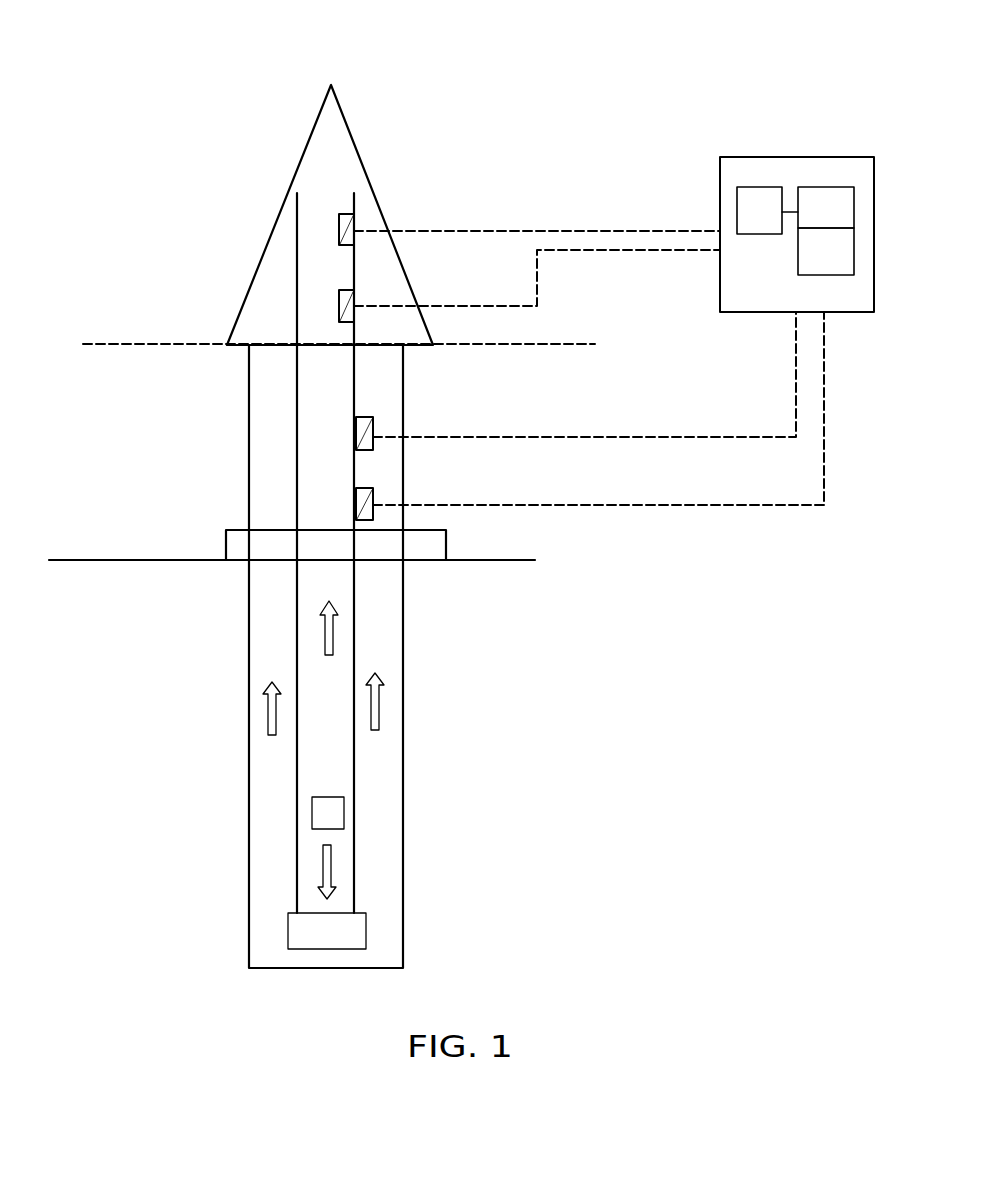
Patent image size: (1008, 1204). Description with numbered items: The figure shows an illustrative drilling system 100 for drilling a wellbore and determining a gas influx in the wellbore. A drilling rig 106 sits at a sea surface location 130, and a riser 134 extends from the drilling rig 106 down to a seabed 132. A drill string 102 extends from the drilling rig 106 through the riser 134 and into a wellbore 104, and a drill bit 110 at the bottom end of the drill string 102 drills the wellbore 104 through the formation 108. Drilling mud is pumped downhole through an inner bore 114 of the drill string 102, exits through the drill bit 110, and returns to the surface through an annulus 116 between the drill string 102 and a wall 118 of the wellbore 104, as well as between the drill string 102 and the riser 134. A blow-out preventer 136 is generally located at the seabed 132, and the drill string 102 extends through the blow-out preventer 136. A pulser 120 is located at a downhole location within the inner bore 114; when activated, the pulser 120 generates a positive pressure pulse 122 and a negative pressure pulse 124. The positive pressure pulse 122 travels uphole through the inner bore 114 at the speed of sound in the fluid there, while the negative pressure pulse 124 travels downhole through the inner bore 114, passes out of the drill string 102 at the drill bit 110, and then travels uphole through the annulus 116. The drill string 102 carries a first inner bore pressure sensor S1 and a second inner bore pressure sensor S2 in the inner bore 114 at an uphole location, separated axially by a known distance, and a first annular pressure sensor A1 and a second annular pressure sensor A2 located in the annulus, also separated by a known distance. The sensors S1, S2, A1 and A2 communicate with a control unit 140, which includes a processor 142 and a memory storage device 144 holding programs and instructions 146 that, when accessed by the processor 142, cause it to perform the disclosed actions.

The drilling system 100 is at (713, 100).
The drill string 102 is at (355, 637).
The wellbore 104 is at (403, 657).
The drilling rig 106 is at (360, 150).
The formation 108 is at (553, 517).
The drill bit 110 is at (288, 930).
The inner bore 114 is at (320, 418).
The annulus 116 is at (288, 788).
The wall 118 is at (249, 651).
The pulser 120 is at (344, 816).
The positive pressure pulse 122 is at (325, 637).
The negative pressure pulse 124 is at (268, 705).
The sea surface location 130 is at (109, 342).
The seabed 132 is at (81, 558).
The riser 134 is at (249, 440).
The blow-out preventer 136 is at (238, 546).
The control unit 140 is at (720, 207).
The processor 142 is at (776, 225).
The memory storage device 144 is at (842, 223).
The programs and instructions 146 is at (842, 268).
The first inner bore pressure sensor S1 is at (350, 300).
The second inner bore pressure sensor S2 is at (350, 223).
The first annular pressure sensor A1 is at (373, 505).
The second annular pressure sensor A2 is at (373, 435).